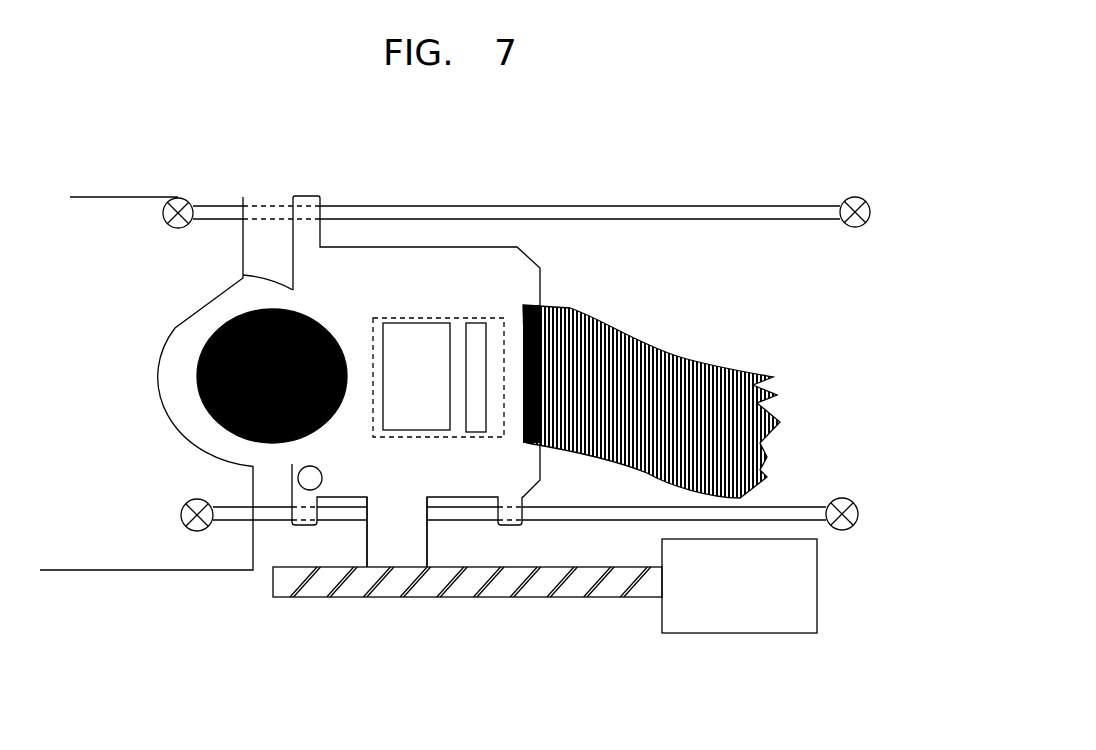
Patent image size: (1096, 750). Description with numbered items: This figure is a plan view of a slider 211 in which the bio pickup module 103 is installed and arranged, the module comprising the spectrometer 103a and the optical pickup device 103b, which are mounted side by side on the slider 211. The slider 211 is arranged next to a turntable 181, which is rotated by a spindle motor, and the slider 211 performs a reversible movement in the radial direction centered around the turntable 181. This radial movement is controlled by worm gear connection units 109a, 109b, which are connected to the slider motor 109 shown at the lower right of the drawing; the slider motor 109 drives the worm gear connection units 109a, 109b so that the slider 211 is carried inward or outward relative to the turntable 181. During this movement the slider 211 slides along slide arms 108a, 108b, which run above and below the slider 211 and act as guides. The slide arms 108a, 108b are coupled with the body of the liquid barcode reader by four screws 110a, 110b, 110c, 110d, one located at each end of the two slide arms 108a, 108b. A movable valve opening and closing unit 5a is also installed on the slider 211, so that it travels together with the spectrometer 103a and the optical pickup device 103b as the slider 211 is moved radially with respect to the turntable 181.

The slider 211 is at (370, 247).
The turntable 181 is at (198, 407).
The movable valve opening and closing unit 5a is at (300, 468).
The optical unit 103 is at (468, 318).
The spectrometer 103a is at (397, 433).
The optical pickup device 103b is at (470, 433).
The slide arm 108a is at (470, 206).
The slide arm 108b is at (567, 523).
The screw 110a is at (175, 198).
The screw 110b is at (860, 197).
The screw 110c is at (182, 515).
The screw 110d is at (848, 502).
The slider motor 109 is at (728, 635).
The worm gear connection unit 109a is at (320, 597).
The worm gear connection unit 109b is at (427, 537).